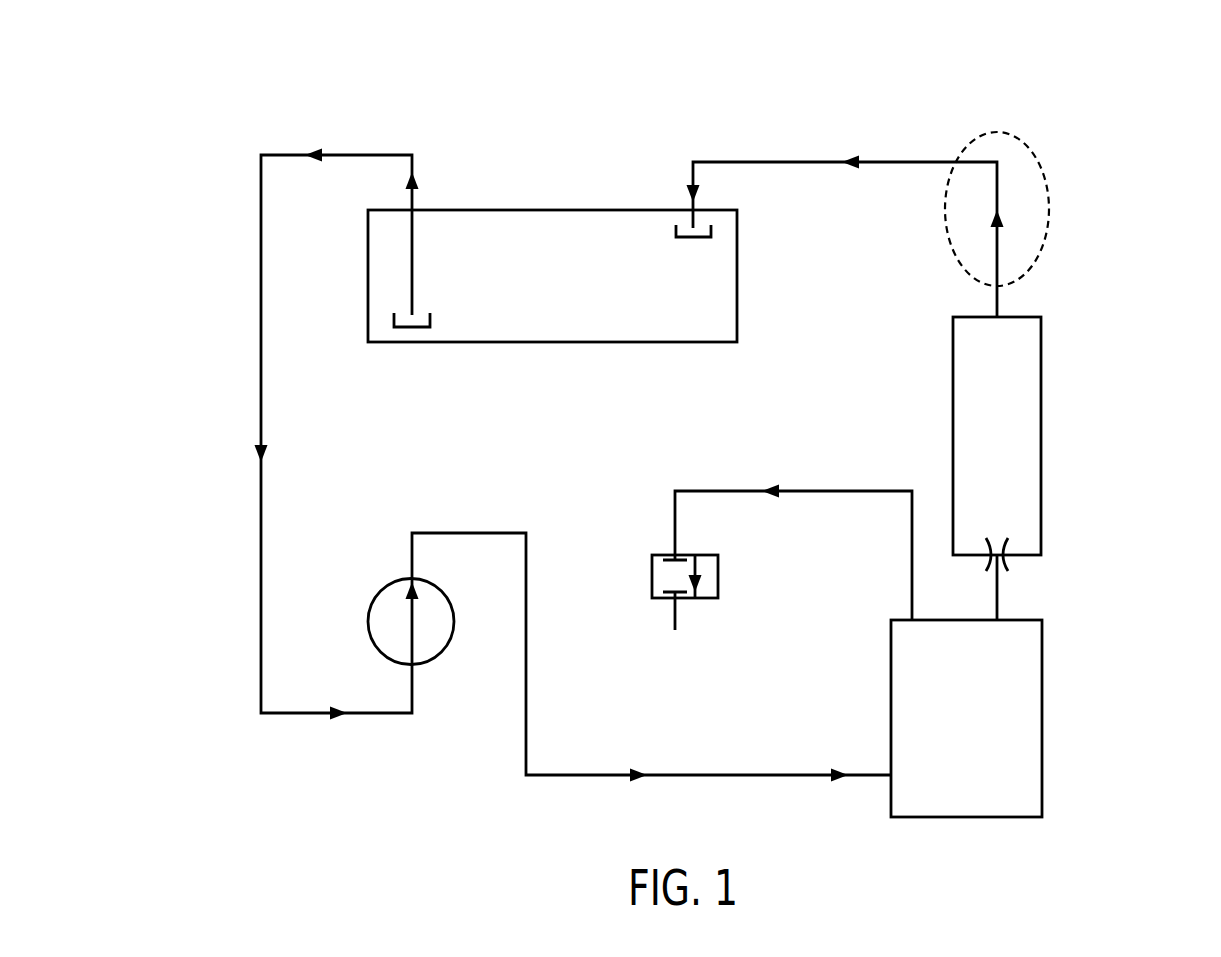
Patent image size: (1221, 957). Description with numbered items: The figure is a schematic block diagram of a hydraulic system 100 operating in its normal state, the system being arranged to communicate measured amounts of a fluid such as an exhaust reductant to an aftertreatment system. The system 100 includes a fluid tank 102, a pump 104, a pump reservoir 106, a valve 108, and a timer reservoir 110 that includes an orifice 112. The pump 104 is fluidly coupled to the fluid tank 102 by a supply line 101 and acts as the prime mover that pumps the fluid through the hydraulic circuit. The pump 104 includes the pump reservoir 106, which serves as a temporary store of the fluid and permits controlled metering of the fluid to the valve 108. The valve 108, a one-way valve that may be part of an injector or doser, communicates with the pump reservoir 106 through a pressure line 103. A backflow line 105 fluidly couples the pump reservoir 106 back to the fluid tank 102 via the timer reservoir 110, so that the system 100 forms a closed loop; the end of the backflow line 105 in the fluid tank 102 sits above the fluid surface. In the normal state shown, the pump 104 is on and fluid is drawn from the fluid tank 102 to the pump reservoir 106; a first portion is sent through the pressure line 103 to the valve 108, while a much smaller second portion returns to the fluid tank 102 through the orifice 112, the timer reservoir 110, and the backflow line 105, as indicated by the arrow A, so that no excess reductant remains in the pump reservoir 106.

The hydraulic system 100 is at (1018, 77).
The supply line 101 is at (260, 322).
The fluid tank 102 is at (500, 210).
The pressure line 103 is at (703, 490).
The pump 104 is at (386, 586).
The backflow line 105 is at (998, 300).
The pump reservoir 106 is at (1042, 790).
The valve 108 is at (700, 592).
The timer reservoir 110 is at (1041, 400).
The orifice 112 is at (1008, 545).
The arrow A is at (1036, 149).